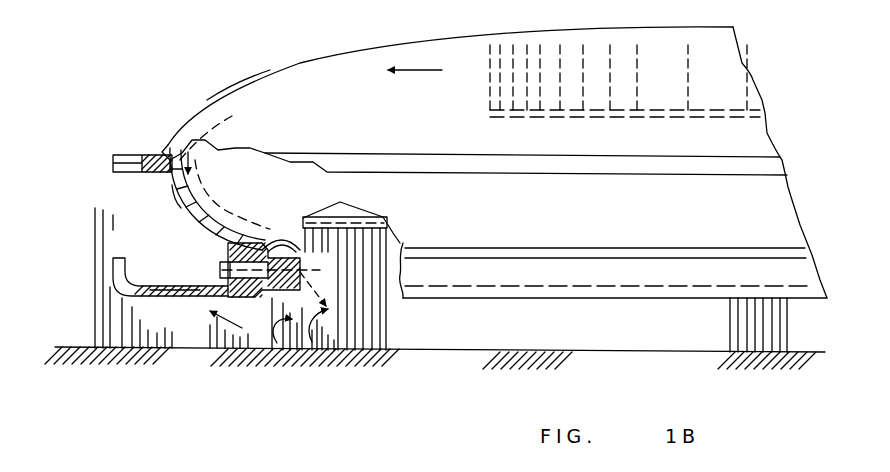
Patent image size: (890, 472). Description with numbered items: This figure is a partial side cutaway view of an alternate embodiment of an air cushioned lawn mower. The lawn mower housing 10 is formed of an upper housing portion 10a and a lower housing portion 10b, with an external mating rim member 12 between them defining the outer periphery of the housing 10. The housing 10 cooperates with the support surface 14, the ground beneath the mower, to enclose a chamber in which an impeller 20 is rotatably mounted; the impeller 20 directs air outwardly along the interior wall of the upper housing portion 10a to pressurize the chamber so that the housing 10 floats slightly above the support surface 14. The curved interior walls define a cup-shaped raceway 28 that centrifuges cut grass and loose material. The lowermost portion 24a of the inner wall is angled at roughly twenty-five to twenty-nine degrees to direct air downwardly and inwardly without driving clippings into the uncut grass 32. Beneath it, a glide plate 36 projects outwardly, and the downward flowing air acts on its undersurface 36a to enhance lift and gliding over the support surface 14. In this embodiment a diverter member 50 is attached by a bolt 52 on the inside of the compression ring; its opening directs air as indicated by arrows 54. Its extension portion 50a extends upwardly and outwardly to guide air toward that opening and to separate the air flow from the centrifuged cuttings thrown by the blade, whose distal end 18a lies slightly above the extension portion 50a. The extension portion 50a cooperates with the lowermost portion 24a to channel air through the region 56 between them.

The lawn mower housing 10 is at (375, 43).
The upper housing portion 10a is at (207, 100).
The lower housing portion 10b is at (181, 208).
The external mating rim member 12 is at (113, 156).
The support surface 14 is at (514, 351).
The distal end of blade 18a is at (307, 212).
The impeller 20 is at (490, 90).
The lowermost portion of interior wall 24a is at (260, 235).
The raceway 28 is at (228, 147).
The uncut grass 32 is at (405, 247).
The glide plate 36 is at (152, 287).
The undersurface of glide plate 36a is at (196, 297).
The diverter member 50 is at (268, 290).
The extension portion 50a is at (300, 240).
The bolt 52 is at (222, 272).
The arrows 54 is at (328, 370).
The region 56 is at (279, 250).